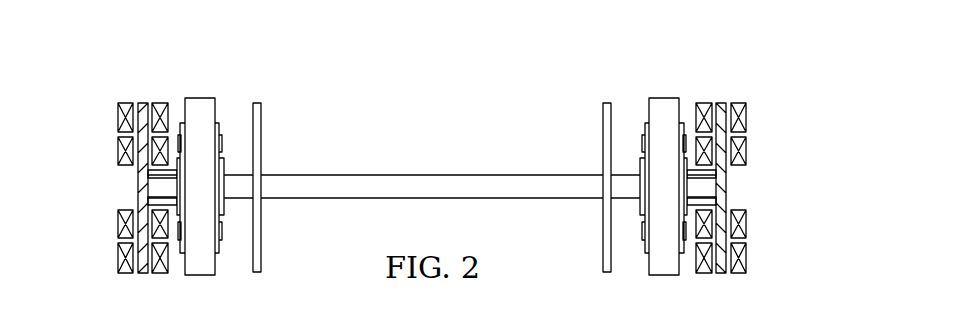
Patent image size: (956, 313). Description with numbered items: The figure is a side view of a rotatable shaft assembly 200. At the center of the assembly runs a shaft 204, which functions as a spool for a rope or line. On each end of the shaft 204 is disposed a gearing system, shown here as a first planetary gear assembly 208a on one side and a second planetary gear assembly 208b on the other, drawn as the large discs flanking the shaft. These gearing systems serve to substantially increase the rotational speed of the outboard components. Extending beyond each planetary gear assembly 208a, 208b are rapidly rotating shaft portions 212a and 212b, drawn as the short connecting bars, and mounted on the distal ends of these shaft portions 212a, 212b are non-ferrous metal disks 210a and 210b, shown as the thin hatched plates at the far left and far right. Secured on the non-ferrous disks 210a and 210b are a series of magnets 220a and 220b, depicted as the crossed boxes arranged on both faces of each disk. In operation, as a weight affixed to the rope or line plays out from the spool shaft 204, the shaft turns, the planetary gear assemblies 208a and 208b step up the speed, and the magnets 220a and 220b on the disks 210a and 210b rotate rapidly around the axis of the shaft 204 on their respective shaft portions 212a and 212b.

The rotatable shaft assembly 200 is at (432, 161).
The shaft 204 is at (433, 173).
The first planetary gear assembly 208a is at (197, 99).
The second planetary gear assembly 208b is at (663, 99).
The non-ferrous metal disk 210a is at (145, 103).
The non-ferrous metal disk 210b is at (720, 103).
The rapidly rotating shaft portion 212a is at (162, 202).
The rapidly rotating shaft portion 212b is at (702, 202).
The magnets 220a is at (118, 115).
The magnets 220b is at (746, 115).